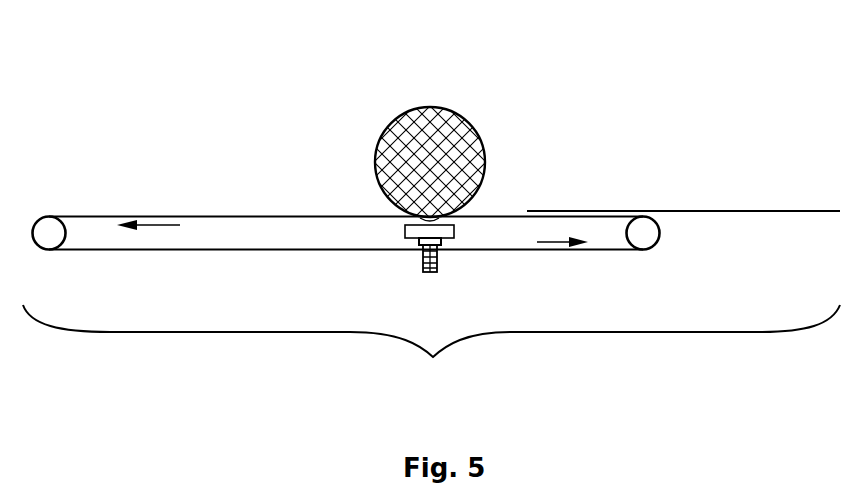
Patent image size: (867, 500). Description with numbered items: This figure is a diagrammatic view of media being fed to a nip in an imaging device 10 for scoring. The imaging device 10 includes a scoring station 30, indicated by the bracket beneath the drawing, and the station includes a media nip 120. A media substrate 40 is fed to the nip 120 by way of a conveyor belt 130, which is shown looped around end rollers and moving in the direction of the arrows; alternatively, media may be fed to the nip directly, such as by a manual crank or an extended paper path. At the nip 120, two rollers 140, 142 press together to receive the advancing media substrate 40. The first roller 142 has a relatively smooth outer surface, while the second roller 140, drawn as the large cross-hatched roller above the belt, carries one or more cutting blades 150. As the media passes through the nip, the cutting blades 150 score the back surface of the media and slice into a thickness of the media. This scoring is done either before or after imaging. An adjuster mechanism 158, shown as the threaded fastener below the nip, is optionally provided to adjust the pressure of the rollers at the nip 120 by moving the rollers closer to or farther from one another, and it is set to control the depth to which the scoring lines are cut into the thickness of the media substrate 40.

The imaging device 10 is at (170, 70).
The scoring station 30 is at (431, 350).
The media substrate 40 is at (661, 211).
The media nip 120 is at (458, 216).
The conveyor belt 130 is at (208, 251).
The second roller 140 is at (418, 105).
The first roller 142 is at (405, 216).
The cutting blade 150 is at (471, 121).
The adjuster mechanism 158 is at (437, 262).